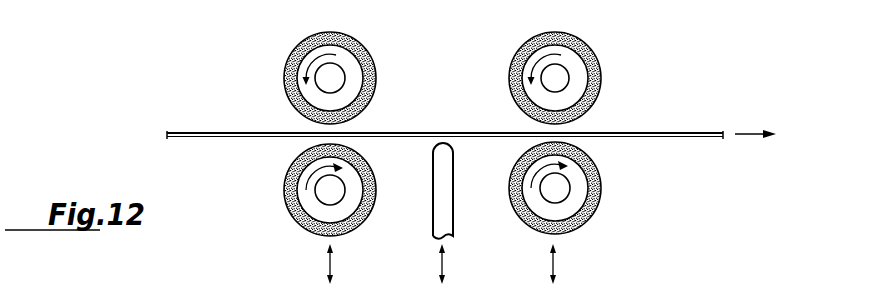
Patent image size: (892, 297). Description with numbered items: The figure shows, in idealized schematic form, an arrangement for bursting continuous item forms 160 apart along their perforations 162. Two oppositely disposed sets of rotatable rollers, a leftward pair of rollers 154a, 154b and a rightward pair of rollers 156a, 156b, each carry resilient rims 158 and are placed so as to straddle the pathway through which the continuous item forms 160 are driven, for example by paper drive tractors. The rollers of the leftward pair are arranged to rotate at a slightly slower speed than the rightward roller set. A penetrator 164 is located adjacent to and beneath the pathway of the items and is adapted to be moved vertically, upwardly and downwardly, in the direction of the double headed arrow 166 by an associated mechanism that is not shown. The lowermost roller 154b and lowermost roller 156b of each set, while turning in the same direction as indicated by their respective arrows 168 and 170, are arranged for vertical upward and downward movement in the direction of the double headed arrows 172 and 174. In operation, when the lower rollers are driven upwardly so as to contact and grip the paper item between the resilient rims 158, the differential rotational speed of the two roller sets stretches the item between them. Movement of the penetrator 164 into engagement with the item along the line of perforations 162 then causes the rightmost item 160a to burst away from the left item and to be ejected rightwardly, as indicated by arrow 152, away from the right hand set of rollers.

The arrow 152 is at (757, 132).
The rotatable roller 154a is at (353, 58).
The lowermost roller 154b is at (305, 202).
The rotatable roller 156a is at (580, 58).
The lowermost roller 156b is at (585, 181).
The resilient rim 158 is at (290, 76).
The continuous item forms 160 is at (189, 132).
The rightmost item 160a is at (683, 133).
The perforations 162 is at (441, 132).
The penetrator 164 is at (450, 211).
The double headed arrow 166 is at (445, 263).
The arrow 168 is at (307, 178).
The arrow 170 is at (530, 173).
The double headed arrow 172 is at (327, 263).
The double headed arrow 174 is at (556, 262).